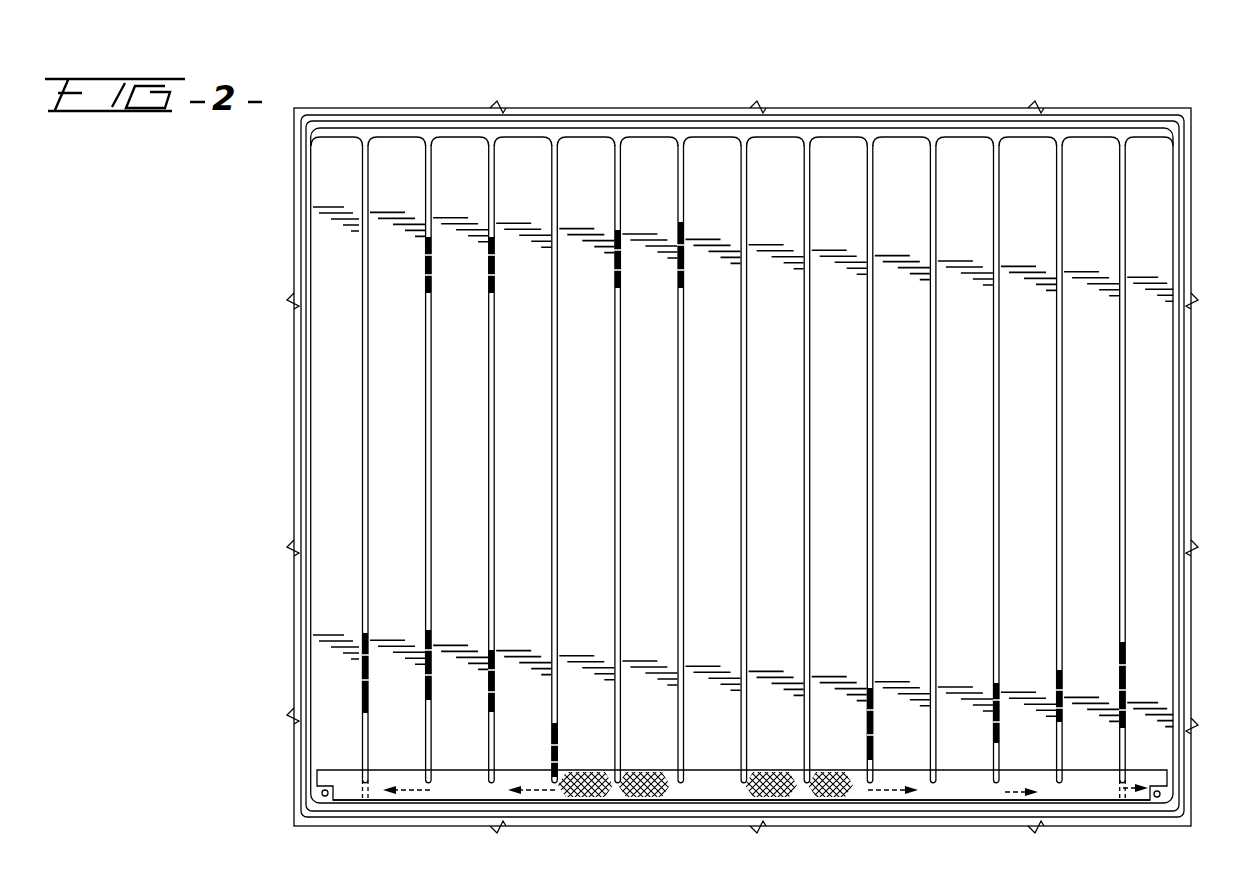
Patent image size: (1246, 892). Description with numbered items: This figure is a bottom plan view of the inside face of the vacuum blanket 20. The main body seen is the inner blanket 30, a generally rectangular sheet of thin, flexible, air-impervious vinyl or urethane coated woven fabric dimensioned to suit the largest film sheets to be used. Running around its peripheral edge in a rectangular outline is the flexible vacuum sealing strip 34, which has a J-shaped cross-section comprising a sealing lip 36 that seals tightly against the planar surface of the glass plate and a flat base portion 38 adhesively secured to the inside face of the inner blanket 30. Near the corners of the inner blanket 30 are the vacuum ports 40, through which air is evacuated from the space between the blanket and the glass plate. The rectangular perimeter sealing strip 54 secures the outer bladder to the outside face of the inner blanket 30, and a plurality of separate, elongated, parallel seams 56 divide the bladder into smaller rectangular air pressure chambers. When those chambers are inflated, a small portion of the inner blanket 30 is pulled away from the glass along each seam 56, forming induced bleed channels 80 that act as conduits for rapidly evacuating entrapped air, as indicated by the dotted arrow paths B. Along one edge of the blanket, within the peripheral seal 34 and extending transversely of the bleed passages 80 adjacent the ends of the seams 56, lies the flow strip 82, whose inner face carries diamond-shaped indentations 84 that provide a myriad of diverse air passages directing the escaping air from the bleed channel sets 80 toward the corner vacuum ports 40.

The vacuum blanket 20 is at (258, 503).
The inner blanket 30 is at (1182, 822).
The vacuum sealing strip 34 is at (305, 398).
The sealing lip 36 is at (300, 312).
The base portion 38 is at (295, 207).
The vacuum ports 40 is at (322, 792).
The perimeter sealing strip 54 is at (305, 625).
The seams 56 is at (364, 585).
The induced bleed channel 80 is at (366, 450).
The flow strip 82 is at (697, 785).
The diamond-shaped indentations 84 is at (775, 785).
The dotted arrow paths B is at (491, 270).